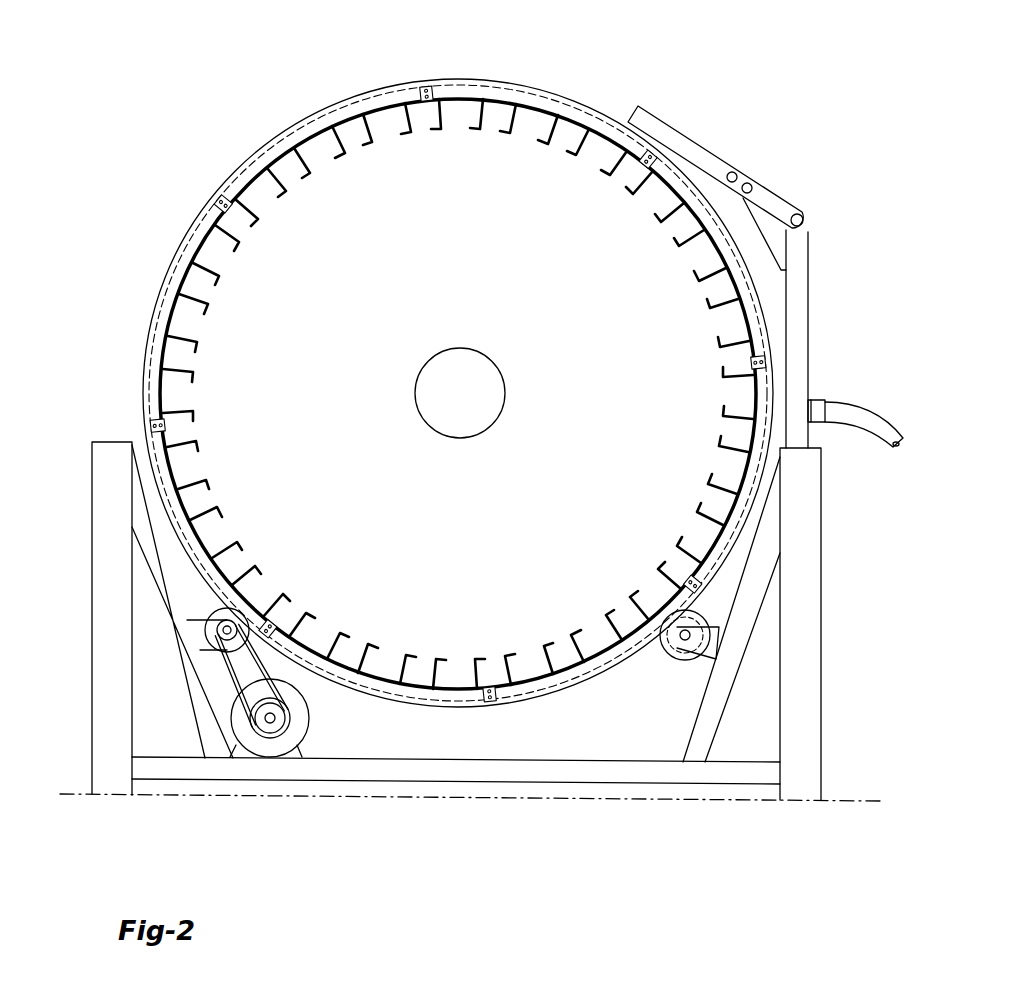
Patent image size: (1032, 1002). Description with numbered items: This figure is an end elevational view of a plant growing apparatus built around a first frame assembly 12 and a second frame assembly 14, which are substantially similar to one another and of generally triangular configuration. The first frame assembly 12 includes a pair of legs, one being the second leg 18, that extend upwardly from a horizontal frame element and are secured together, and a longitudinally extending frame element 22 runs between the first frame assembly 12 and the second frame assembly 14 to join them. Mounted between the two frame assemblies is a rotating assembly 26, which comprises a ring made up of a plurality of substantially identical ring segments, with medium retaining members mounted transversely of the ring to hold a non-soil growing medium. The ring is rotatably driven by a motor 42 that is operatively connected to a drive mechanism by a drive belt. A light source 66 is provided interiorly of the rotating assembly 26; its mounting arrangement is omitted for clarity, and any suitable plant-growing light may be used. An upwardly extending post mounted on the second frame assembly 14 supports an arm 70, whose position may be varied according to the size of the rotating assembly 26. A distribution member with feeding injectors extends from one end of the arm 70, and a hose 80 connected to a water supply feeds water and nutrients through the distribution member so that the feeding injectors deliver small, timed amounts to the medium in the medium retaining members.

The first frame assembly 12 is at (88, 437).
The second frame assembly 14 is at (832, 573).
The second leg 18 is at (105, 525).
The longitudinally extending frame element 22 is at (523, 770).
The rotating assembly 26 is at (505, 77).
The motor 42 is at (303, 722).
The light source 66 is at (500, 372).
The arm 70 is at (767, 198).
The hose 80 is at (850, 413).